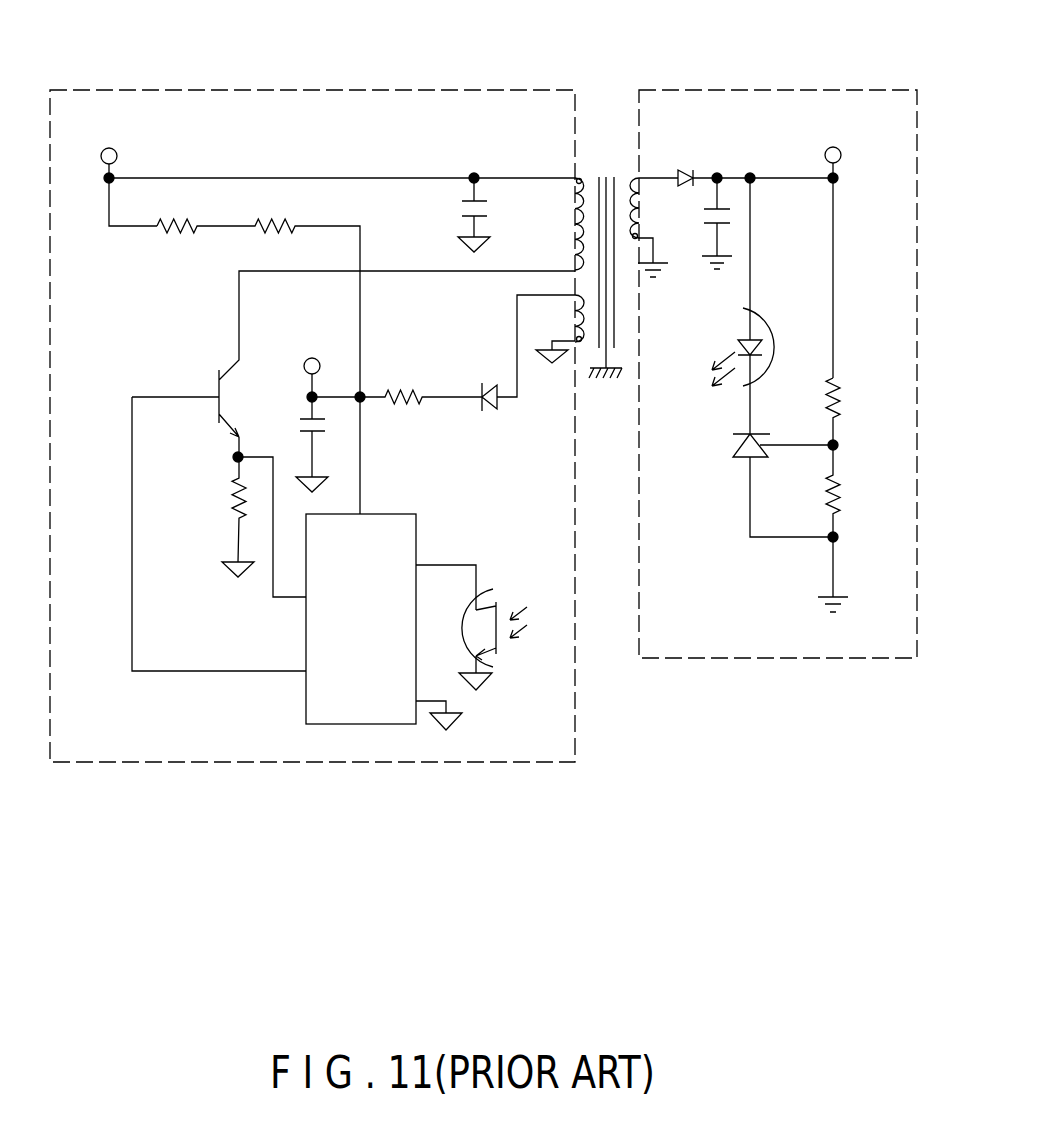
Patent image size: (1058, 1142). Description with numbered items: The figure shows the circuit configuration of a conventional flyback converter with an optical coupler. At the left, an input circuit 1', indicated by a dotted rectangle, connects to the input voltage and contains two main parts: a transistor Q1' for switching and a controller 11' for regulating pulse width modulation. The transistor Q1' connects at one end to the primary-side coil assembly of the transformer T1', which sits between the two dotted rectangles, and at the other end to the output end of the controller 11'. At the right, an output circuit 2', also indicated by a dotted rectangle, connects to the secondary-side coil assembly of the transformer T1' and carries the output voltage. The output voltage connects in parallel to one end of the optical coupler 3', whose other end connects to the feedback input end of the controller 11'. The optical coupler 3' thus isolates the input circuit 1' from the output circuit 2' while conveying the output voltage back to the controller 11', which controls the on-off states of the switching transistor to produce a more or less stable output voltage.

The input circuit 1' is at (359, 429).
The output circuit 2' is at (778, 329).
The optical coupler 3' is at (616, 551).
The controller 11' is at (395, 686).
The transistor Q1' is at (353, 354).
The transformer T1' is at (602, 260).